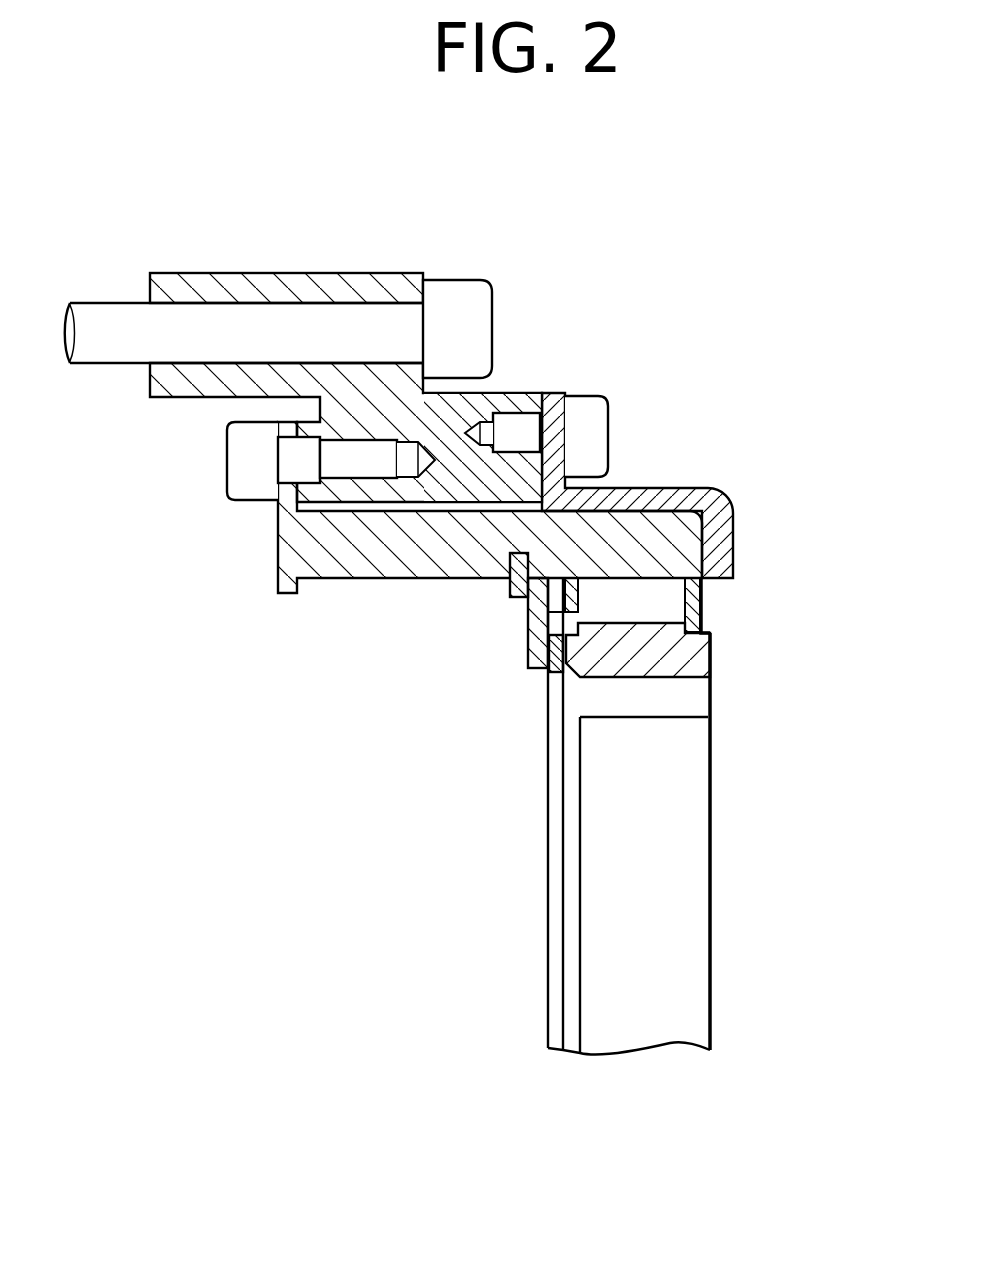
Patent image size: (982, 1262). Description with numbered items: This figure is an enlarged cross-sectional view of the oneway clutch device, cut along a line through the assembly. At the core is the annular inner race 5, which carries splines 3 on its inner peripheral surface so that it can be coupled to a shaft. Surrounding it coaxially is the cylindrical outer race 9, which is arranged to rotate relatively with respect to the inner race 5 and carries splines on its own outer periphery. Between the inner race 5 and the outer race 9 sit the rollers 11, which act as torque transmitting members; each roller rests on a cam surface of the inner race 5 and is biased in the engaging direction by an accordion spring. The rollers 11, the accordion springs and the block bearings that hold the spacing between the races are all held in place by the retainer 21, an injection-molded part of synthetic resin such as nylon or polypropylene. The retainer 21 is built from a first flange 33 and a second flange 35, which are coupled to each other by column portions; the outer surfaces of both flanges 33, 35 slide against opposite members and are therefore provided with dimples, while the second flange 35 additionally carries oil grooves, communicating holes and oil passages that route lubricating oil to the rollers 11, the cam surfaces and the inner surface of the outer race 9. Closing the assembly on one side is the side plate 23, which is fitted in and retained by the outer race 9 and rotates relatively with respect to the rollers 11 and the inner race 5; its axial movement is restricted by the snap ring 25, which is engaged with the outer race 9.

The splines 3 is at (690, 700).
The inner race 5 is at (724, 862).
The outer race 9 is at (735, 514).
The rollers 11 is at (640, 596).
The retainer 21 is at (716, 614).
The side plate 23 is at (528, 633).
The snap ring 25 is at (510, 582).
The first flange 33 is at (705, 597).
The second flange 35 is at (553, 646).